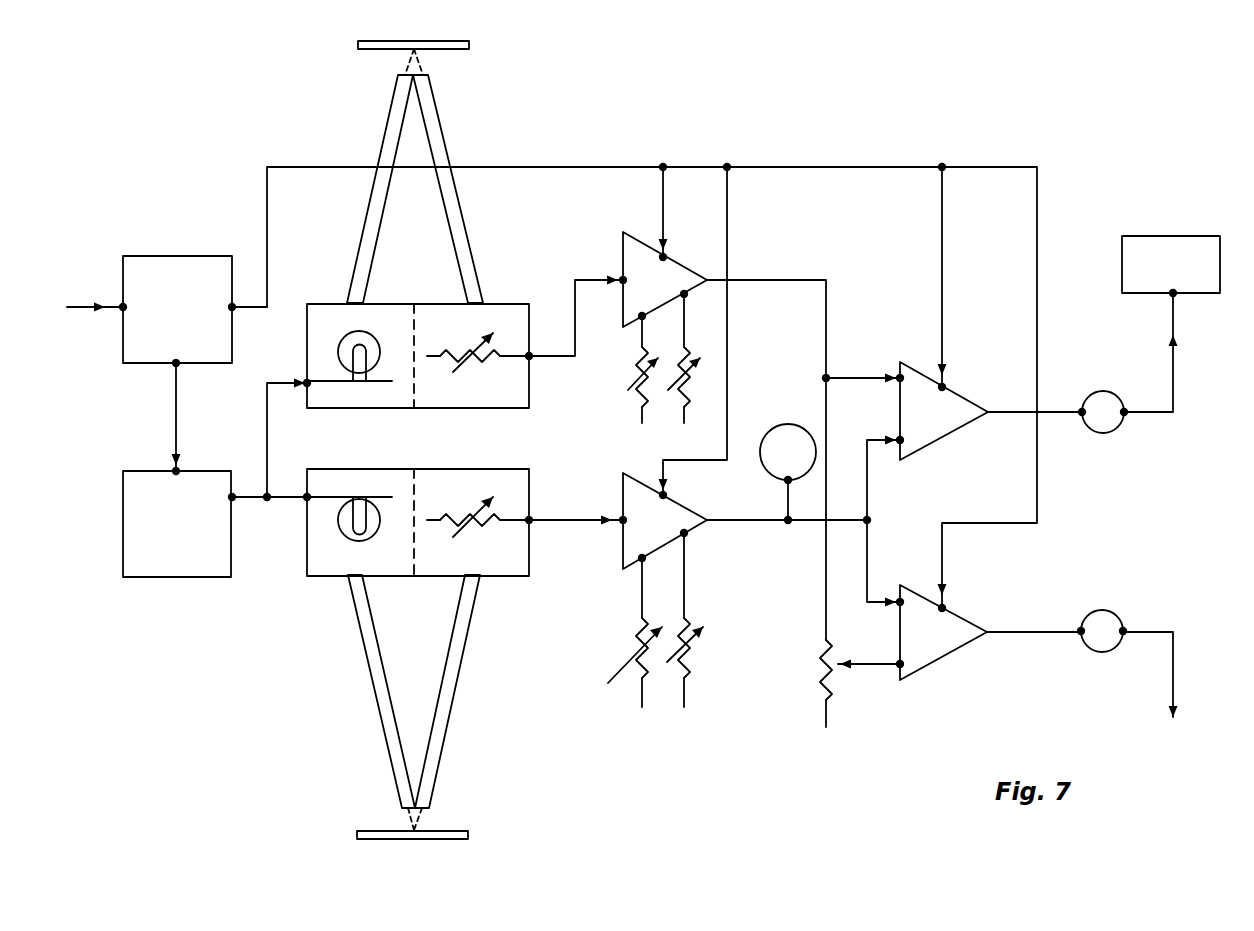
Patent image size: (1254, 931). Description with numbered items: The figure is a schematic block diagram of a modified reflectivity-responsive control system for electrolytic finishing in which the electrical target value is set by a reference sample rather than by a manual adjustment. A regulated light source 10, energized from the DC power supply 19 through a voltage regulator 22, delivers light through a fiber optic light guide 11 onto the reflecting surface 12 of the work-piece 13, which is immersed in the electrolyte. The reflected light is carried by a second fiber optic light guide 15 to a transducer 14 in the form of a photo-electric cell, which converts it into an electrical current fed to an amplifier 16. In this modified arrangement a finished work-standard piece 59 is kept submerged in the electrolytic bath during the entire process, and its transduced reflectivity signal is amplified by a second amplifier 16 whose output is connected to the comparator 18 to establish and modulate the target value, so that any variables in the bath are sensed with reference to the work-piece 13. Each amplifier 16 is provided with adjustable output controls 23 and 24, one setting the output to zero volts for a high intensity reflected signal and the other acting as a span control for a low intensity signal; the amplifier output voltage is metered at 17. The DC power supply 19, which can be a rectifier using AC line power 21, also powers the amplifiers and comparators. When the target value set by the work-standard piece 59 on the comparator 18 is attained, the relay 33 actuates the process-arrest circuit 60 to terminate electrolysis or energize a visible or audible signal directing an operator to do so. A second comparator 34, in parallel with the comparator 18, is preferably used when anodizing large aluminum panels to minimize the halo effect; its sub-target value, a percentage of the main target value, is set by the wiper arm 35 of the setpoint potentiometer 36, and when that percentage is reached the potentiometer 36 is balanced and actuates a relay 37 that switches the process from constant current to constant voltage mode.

The regulated light source 10 is at (349, 436).
The fiber optic light guide 11 is at (357, 441).
The reflecting surface 12 is at (369, 439).
The work-piece 13 is at (445, 822).
The transducer 14 is at (478, 435).
The second fiber optic light guide 15 is at (469, 441).
The amplifier 16 is at (637, 396).
The meter 17 is at (786, 450).
The comparator unit 18 is at (949, 409).
The DC power supply 19 is at (177, 291).
The AC line power 21 is at (94, 284).
The voltage regulator 22 is at (177, 498).
The adjustable output control 23 is at (621, 515).
The adjustable output control 24 is at (711, 498).
The relay 33 is at (1103, 394).
The second comparator device 34 is at (949, 627).
The wiper arm 35 is at (871, 691).
The setpoint potentiometer 36 is at (799, 679).
The relay 37 is at (1102, 611).
The finished work-standard piece 59 is at (448, 67).
The process-arrest circuit 60 is at (1171, 243).